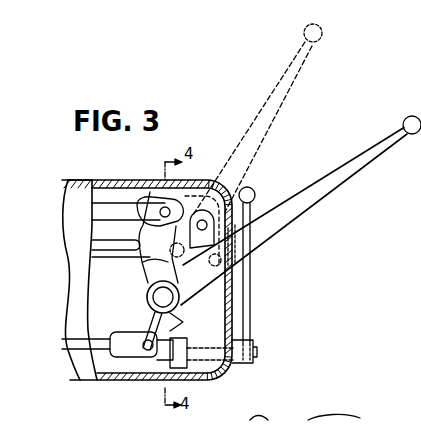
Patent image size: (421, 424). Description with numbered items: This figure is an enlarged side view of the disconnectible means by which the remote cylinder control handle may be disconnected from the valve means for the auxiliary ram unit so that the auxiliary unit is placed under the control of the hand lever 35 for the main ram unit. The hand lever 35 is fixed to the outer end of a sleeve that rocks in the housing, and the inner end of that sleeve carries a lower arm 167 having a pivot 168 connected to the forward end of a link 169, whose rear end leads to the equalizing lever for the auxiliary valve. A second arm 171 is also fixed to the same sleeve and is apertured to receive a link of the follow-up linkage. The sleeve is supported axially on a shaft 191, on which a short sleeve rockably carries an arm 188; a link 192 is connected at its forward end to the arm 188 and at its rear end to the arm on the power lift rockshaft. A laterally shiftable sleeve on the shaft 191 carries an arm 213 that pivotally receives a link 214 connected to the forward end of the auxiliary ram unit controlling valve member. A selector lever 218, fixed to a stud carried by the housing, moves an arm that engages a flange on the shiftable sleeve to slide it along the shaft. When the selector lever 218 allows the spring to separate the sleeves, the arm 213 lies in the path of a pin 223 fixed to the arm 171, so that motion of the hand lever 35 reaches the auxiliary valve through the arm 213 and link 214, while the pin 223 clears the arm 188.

The hand lever 35 is at (342, 183).
The link 214 is at (103, 208).
The arm 213 is at (148, 236).
The second arm 171 is at (191, 218).
The link 192 is at (96, 247).
The arm 188 is at (160, 264).
The shaft 191 is at (154, 295).
The link 169 is at (97, 343).
The lower arm 167 is at (178, 322).
The pivot 168 is at (143, 348).
The pin 223 is at (256, 254).
The selector lever 218 is at (251, 275).